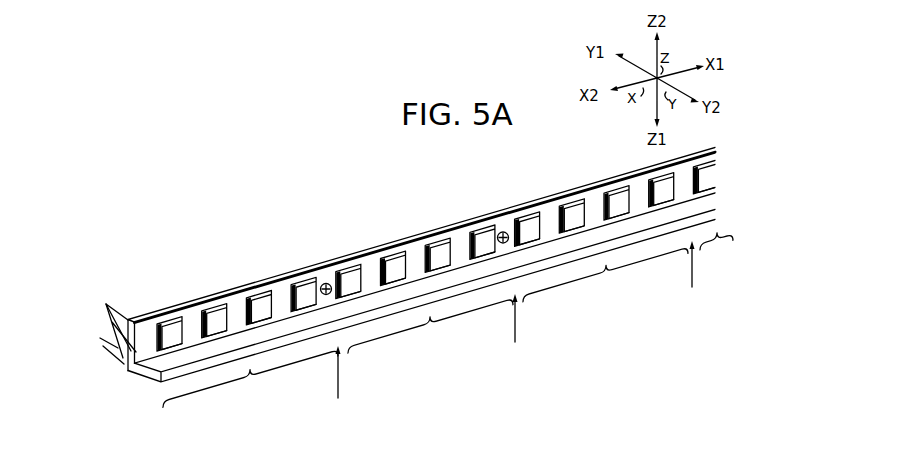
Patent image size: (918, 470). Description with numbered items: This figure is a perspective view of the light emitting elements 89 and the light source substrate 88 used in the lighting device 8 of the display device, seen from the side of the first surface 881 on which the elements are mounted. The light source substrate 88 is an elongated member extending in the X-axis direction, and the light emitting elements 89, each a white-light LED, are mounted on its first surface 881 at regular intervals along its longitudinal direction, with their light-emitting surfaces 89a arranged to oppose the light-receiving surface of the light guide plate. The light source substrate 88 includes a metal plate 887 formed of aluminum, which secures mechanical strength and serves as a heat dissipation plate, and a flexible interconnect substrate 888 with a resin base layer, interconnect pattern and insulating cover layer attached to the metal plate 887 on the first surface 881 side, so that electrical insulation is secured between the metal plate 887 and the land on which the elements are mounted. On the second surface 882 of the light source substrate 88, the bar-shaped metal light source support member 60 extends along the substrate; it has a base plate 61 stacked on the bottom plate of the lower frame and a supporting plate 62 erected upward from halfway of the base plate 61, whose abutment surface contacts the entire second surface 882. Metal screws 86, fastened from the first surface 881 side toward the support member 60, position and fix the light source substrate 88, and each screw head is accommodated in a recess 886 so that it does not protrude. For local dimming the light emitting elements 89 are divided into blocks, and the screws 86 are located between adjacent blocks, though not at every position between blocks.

The lighting device 8 is at (126, 292).
The light source support member 60 is at (94, 306).
The base plate 61 is at (107, 353).
The supporting plate 62 is at (117, 331).
The metal screw 86 is at (323, 283).
The light source substrate 88 is at (295, 224).
The first surface 881 is at (366, 258).
The second surface 882 is at (129, 363).
The recess 886 is at (329, 296).
The metal plate 887 is at (214, 304).
The flexible interconnect substrate 888 is at (264, 281).
The light emitting element 89 is at (217, 314).
The light-emitting surface 89a is at (170, 344).